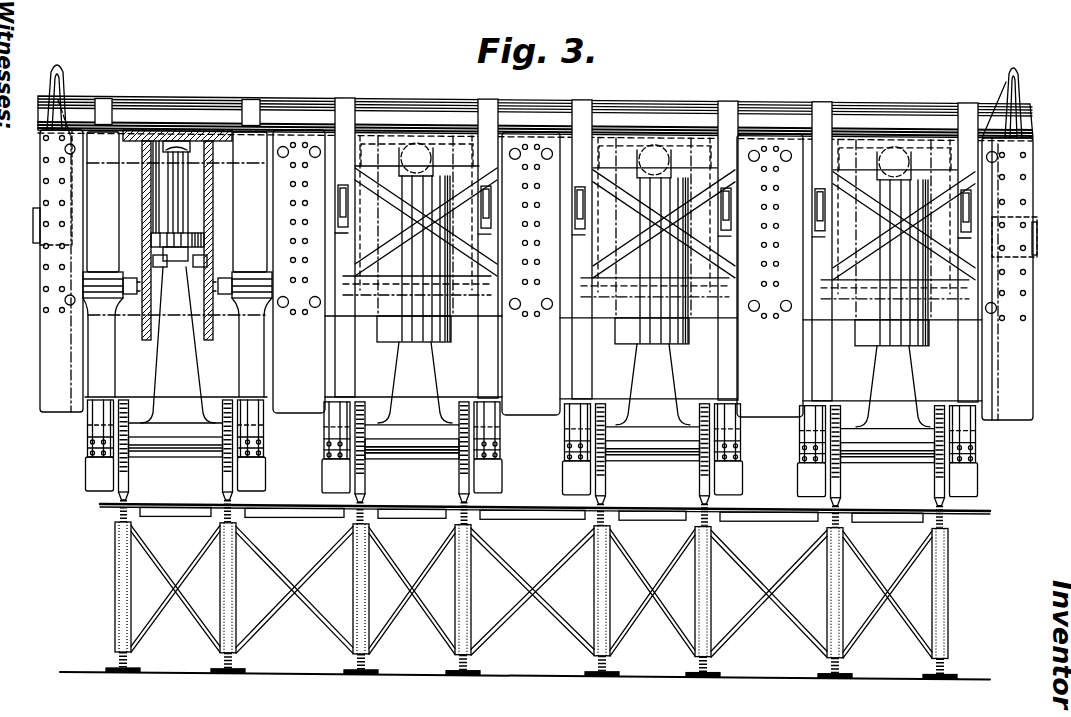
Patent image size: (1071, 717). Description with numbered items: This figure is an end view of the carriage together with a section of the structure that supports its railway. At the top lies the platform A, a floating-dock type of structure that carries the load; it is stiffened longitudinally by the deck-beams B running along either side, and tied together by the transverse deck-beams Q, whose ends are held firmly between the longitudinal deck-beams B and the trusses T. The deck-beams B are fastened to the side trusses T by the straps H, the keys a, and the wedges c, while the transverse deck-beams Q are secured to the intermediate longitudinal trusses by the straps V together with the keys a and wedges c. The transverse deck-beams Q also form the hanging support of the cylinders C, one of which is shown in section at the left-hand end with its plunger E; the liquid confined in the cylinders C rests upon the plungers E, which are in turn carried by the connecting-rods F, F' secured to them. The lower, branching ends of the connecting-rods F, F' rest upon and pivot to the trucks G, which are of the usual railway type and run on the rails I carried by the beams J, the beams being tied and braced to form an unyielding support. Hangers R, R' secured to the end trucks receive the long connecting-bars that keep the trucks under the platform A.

The deck-beam B is at (62, 88).
The strap H is at (52, 92).
The truss T is at (41, 304).
The key a is at (33, 215).
The wedge c is at (38, 246).
The transverse deck-beam Q is at (348, 235).
The strap V is at (728, 237).
The platform A is at (648, 236).
The cylinder C is at (215, 208).
The plunger E is at (155, 242).
The hanger R is at (229, 347).
The rod R' is at (343, 347).
The connecting-rod F is at (415, 346).
The tapered connecting rod F' is at (886, 386).
The truck G is at (87, 447).
The rail I is at (128, 503).
The beam J is at (115, 588).